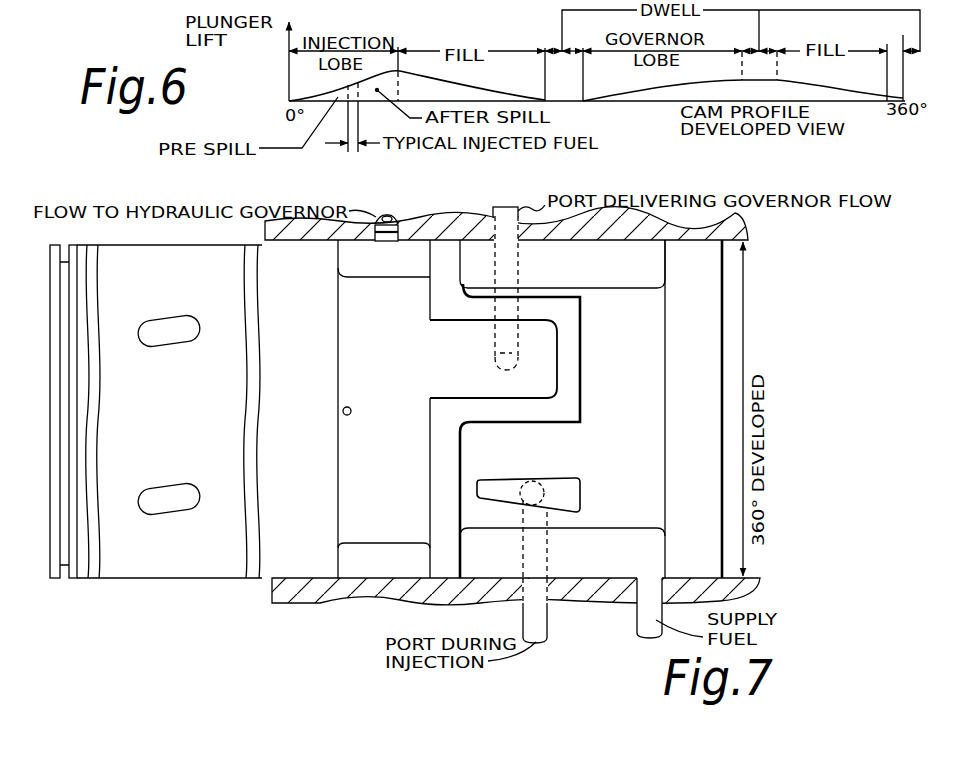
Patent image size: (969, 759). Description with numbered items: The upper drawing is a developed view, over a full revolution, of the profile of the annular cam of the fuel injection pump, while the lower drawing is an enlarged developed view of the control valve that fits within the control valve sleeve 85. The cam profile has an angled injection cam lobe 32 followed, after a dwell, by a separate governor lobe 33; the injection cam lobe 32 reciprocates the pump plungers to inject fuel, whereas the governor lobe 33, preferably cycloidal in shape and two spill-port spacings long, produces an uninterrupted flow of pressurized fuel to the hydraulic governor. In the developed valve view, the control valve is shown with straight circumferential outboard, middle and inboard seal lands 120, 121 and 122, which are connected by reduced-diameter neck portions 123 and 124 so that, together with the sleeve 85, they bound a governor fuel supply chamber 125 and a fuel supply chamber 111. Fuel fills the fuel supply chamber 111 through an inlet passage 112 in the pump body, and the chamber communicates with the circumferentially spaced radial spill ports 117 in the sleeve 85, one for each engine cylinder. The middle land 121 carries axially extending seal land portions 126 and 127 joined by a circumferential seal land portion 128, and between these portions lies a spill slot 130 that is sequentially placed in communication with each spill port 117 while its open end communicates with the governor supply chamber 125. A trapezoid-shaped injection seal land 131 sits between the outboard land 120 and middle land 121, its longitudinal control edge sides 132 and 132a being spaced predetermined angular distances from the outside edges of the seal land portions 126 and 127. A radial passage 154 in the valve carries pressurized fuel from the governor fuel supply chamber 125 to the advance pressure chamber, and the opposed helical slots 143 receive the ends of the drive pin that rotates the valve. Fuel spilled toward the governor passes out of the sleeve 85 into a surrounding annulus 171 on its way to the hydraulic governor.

In FIG. 6, the injection cam lobe 32 is at (424, 72).
In FIG. 6, the governor lobe 33 is at (808, 80).
In FIG. 7, the control valve sleeve 85 is at (328, 608).
In FIG. 7, the fuel supply chamber 111 is at (654, 548).
In FIG. 7, the inlet passage 112 is at (636, 637).
In FIG. 7, the spill ports 117 is at (510, 210).
In FIG. 7, the outboard seal land 120 is at (705, 316).
In FIG. 7, the middle seal land 121 is at (440, 450).
In FIG. 7, the inboard seal land 122 is at (318, 358).
In FIG. 7, the neck portion 123 is at (614, 285).
In FIG. 7, the neck portion 124 is at (360, 276).
In FIG. 7, the governor fuel supply chamber 125 is at (378, 556).
In FIG. 7, the axial seal land portion 126 is at (508, 306).
In FIG. 7, the axial seal land portion 127 is at (517, 410).
In FIG. 7, the circumferential seal land portion 128 is at (570, 385).
In FIG. 7, the spill slot 130 is at (544, 347).
In FIG. 7, the injection seal land 131 is at (582, 496).
In FIG. 7, the control edge side 132 is at (502, 506).
In FIG. 7, the control edge side 132a is at (545, 481).
In FIG. 7, the helical slots 143 is at (162, 346).
In FIG. 7, the radial passage 154 is at (352, 408).
In FIG. 7, the annulus 171 is at (400, 217).